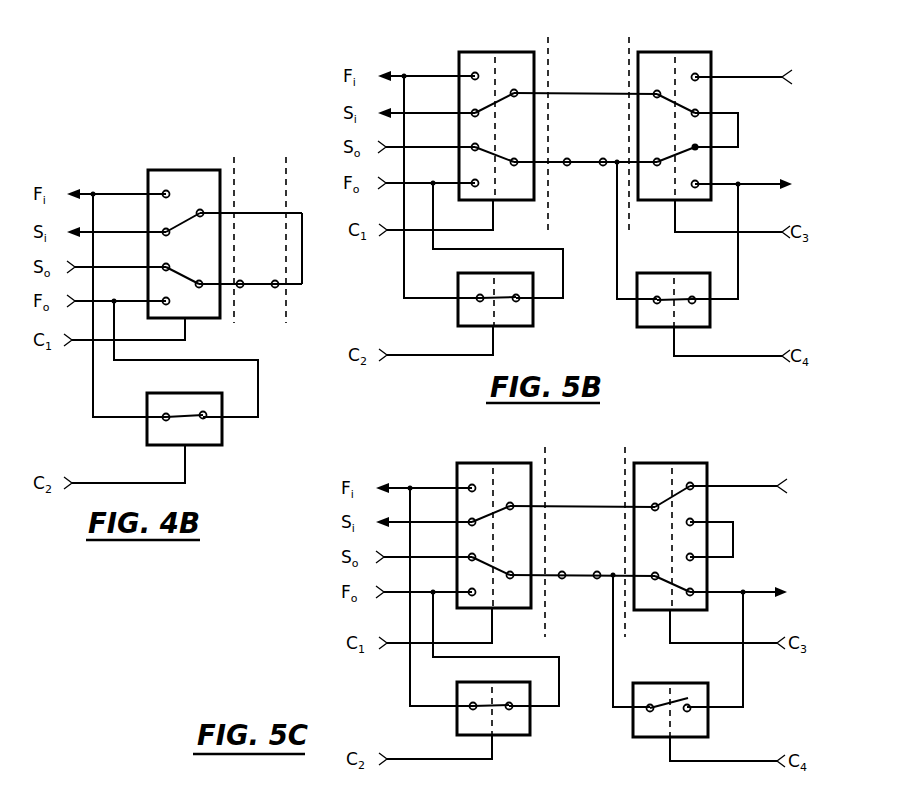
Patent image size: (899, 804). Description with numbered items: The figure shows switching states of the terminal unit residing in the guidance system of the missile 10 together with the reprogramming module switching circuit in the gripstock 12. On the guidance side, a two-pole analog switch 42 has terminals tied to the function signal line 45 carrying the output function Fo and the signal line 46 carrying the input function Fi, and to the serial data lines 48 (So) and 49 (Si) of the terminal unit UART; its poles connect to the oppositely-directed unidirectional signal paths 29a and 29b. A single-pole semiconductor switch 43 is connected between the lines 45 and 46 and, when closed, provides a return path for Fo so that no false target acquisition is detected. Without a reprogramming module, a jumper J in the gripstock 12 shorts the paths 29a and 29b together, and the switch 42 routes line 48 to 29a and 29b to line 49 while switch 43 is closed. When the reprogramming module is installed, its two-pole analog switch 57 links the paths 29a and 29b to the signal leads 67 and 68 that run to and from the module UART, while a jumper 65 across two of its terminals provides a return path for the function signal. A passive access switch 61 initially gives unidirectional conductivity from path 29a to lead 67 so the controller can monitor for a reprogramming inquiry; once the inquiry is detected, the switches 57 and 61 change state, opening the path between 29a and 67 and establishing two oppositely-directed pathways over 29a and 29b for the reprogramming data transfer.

In FIG. 4B, the missile 10 is at (218, 146).
In FIG. 5B, the missile 10 is at (519, 41).
In FIG. 5C, the missile 10 is at (515, 458).
In FIG. 4B, the gripstock 12 is at (303, 147).
In FIG. 5B, the gripstock 12 is at (653, 44).
In FIG. 5C, the gripstock 12 is at (639, 461).
In FIG. 4B, the two-pole analog switch 42 is at (189, 169).
In FIG. 5B, the two-pole analog switch 42 is at (506, 52).
In FIG. 4B, the single-pole semiconductor switch 43 is at (201, 393).
In FIG. 5B, the single-pole semiconductor switch 43 is at (520, 273).
In FIG. 5C, the single-pole semiconductor switch 43 is at (511, 682).
In FIG. 4B, the signal line 45 is at (118, 193).
In FIG. 5B, the signal line 45 is at (441, 182).
In FIG. 5C, the signal line 45 is at (441, 593).
In FIG. 5B, the signal line 46 is at (436, 74).
In FIG. 5C, the signal line 46 is at (436, 491).
In FIG. 4B, the signal line 48 is at (118, 266).
In FIG. 5B, the signal line 48 is at (441, 146).
In FIG. 5C, the signal line 48 is at (441, 558).
In FIG. 4B, the signal line 49 is at (118, 231).
In FIG. 5B, the signal line 49 is at (441, 112).
In FIG. 5C, the signal line 49 is at (441, 522).
In FIG. 4B, the unidirectional signal path 29a is at (239, 289).
In FIG. 5B, the unidirectional signal path 29a is at (564, 168).
In FIG. 5C, the unidirectional signal path 29a is at (560, 582).
In FIG. 4B, the unidirectional signal path 29b is at (271, 211).
In FIG. 5B, the unidirectional signal path 29b is at (599, 91).
In FIG. 5C, the unidirectional signal path 29b is at (595, 506).
In FIG. 4B, the jumper J is at (302, 270).
In FIG. 5B, the two-pole analog switch 57 is at (705, 52).
In FIG. 5C, the two-pole analog switch 57 is at (696, 461).
In FIG. 5B, the passive access switch 61 is at (700, 272).
In FIG. 5C, the passive access switch 61 is at (686, 682).
In FIG. 5B, the jumper 65 is at (738, 132).
In FIG. 5B, the signal lead 67 is at (746, 184).
In FIG. 5C, the signal lead 67 is at (728, 592).
In FIG. 5B, the signal lead 68 is at (774, 78).
In FIG. 5C, the signal lead 68 is at (763, 487).